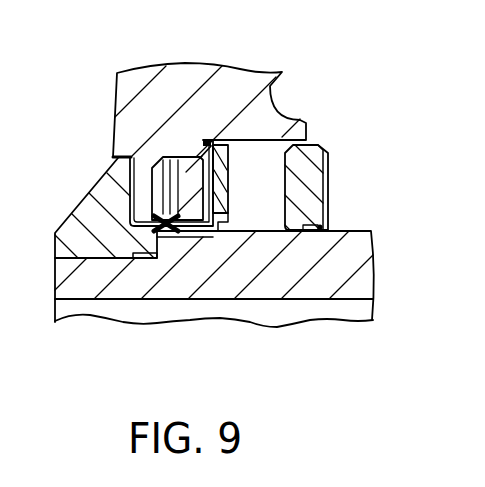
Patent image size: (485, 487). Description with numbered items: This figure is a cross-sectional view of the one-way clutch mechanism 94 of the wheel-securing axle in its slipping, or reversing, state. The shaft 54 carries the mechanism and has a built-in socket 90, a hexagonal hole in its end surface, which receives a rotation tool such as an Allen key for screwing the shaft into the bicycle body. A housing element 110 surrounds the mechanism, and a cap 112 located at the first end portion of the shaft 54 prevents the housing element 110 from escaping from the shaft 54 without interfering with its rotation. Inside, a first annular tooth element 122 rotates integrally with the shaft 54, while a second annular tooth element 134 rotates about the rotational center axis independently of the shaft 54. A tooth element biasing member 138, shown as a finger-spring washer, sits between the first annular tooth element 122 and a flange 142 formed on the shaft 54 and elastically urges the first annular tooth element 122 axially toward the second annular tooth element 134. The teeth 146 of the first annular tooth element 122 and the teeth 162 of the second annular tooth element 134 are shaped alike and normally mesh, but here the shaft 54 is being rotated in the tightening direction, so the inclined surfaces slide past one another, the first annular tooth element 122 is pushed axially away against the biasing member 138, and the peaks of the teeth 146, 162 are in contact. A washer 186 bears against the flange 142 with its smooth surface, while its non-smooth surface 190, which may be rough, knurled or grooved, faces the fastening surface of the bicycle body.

The shaft 54 is at (360, 287).
The built-in socket 90 is at (92, 307).
The one-way clutch mechanism 94 is at (327, 92).
The housing element 110 is at (188, 76).
The cap 112 is at (92, 193).
The first annular tooth element 122 is at (207, 232).
The second annular tooth element 134 is at (140, 184).
The tooth element biasing member 138 is at (217, 137).
The flange 142 is at (263, 153).
The teeth 146 is at (167, 157).
The teeth 162 is at (147, 146).
The washer 186 is at (318, 142).
The non-smooth surface 190 is at (332, 185).